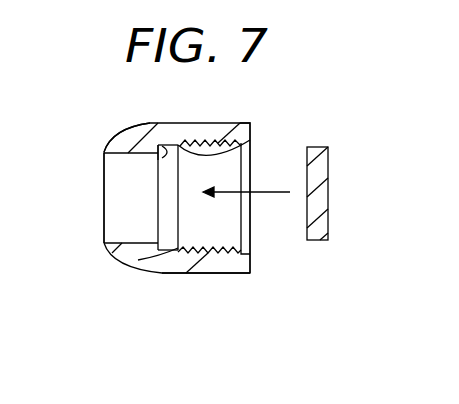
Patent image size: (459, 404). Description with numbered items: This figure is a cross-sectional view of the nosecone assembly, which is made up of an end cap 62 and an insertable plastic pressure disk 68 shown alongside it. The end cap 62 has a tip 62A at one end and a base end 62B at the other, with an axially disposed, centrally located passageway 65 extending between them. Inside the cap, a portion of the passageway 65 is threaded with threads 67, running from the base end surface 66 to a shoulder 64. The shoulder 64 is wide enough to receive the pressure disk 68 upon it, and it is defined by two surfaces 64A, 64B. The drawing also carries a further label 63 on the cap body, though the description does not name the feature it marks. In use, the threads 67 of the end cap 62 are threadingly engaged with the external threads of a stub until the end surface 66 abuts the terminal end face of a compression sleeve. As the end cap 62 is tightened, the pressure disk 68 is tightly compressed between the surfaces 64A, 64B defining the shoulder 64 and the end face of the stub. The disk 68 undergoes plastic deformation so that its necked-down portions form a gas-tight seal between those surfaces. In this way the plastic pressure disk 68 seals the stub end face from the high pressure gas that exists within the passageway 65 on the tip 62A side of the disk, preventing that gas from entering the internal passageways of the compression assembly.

The end cap 62 is at (104, 263).
The tip 62A is at (128, 122).
The base end 62B is at (247, 117).
The bottom wall 63 is at (215, 276).
The shoulder 64 is at (150, 262).
The shoulder surface 64A is at (242, 145).
The shoulder surface 64B is at (160, 153).
The passageway 65 is at (104, 202).
The base end surface 66 is at (255, 268).
The threads 67 is at (203, 248).
The plastic pressure disk 68 is at (318, 238).